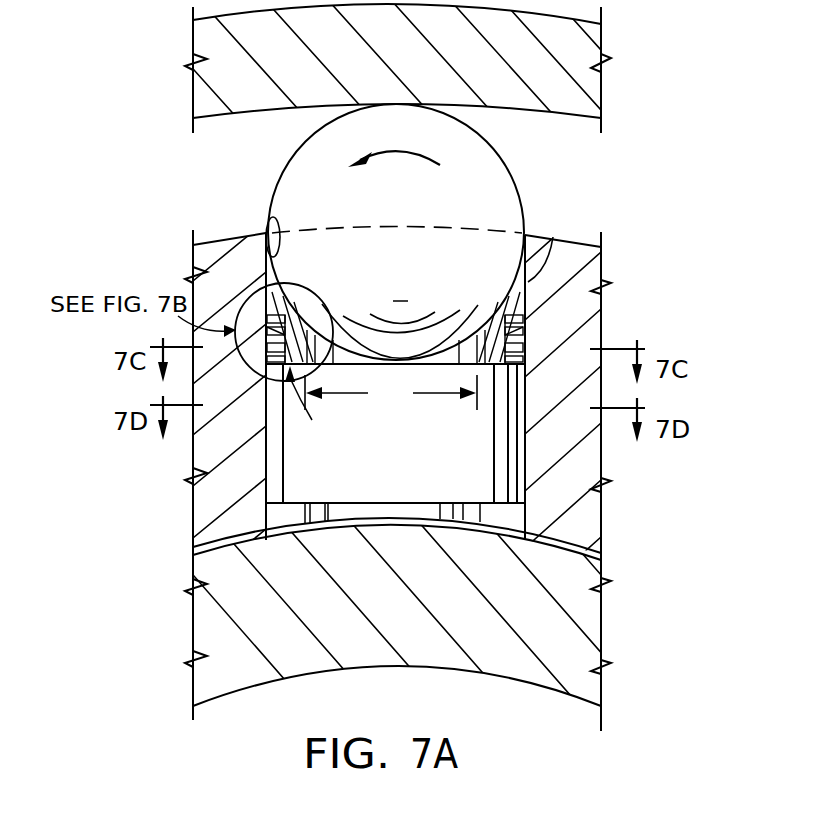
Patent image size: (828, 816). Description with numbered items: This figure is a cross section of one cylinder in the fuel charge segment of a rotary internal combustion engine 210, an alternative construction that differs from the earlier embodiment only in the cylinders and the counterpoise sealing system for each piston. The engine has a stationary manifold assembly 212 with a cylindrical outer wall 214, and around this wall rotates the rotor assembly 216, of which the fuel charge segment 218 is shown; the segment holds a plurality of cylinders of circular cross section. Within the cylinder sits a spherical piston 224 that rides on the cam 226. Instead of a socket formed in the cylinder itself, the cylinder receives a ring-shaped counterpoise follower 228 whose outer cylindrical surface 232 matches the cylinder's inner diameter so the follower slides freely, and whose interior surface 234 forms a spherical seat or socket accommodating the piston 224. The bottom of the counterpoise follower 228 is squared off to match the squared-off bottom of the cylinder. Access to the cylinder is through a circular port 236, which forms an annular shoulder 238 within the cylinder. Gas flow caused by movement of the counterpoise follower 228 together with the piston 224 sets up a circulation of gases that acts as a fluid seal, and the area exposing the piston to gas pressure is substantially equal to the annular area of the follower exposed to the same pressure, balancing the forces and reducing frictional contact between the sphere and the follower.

The rotary internal combustion engine 210 is at (163, 44).
The stationary manifold assembly 212 is at (504, 688).
The cylindrical outer wall 214 is at (250, 528).
The rotor assembly 216 is at (612, 316).
The fuel charge segment 218 is at (230, 238).
The spherical piston 224 is at (509, 166).
The cam 226 is at (258, 119).
The counterpoise follower 228 is at (498, 368).
The outer cylindrical surface 232 is at (528, 263).
The interior surface 234 is at (270, 230).
The circular port 236 is at (340, 526).
The annular shoulder 238 is at (299, 501).